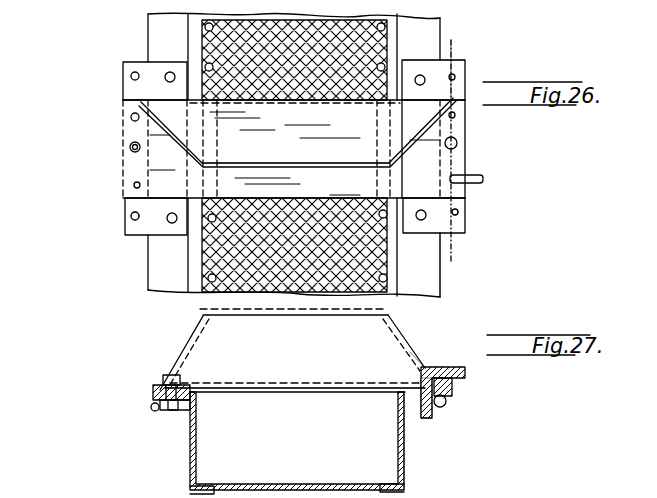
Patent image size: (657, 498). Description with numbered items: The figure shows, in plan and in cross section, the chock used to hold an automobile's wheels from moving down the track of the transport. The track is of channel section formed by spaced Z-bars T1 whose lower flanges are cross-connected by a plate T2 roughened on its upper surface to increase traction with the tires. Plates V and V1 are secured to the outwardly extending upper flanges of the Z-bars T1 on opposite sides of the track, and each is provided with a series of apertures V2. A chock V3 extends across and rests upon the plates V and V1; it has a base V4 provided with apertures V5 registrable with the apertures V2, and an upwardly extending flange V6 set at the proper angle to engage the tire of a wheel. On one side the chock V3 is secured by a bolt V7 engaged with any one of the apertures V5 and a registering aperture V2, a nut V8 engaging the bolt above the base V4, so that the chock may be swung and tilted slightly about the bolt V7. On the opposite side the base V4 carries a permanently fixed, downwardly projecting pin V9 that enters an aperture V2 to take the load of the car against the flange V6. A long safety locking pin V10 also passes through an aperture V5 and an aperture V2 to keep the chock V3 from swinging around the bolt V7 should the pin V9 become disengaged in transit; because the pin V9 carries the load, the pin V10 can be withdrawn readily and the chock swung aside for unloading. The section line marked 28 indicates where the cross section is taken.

In FIG. 26, the plate T2 is at (215, 296).
In FIG. 27, the plate T2 is at (321, 482).
In FIG. 26, the Z-bars T1 is at (437, 273).
In FIG. 27, the Z-bars T1 is at (406, 470).
In FIG. 26, the plate V is at (146, 232).
In FIG. 27, the plate V is at (150, 398).
In FIG. 26, the plate V1 is at (465, 222).
In FIG. 27, the plate V1 is at (450, 395).
In FIG. 26, the apertures V2 is at (130, 218).
In FIG. 27, the apertures V2 is at (416, 360).
In FIG. 26, the chock V3 is at (132, 109).
In FIG. 27, the chock V3 is at (196, 372).
In FIG. 26, the base V4 is at (125, 128).
In FIG. 27, the base V4 is at (272, 393).
In FIG. 26, the apertures V5 is at (130, 117).
In FIG. 26, the flange V6 is at (338, 166).
In FIG. 27, the flange V6 is at (396, 332).
In FIG. 26, the bolt V7 is at (129, 148).
In FIG. 27, the bolt V7 is at (190, 407).
In FIG. 26, the nut V8 is at (133, 185).
In FIG. 27, the nut V8 is at (162, 381).
In FIG. 26, the pin V9 is at (454, 139).
In FIG. 26, the safety locking pin V10 is at (484, 177).
In FIG. 27, the safety locking pin V10 is at (430, 412).
In FIG. 26, the section line 28 is at (463, 51).